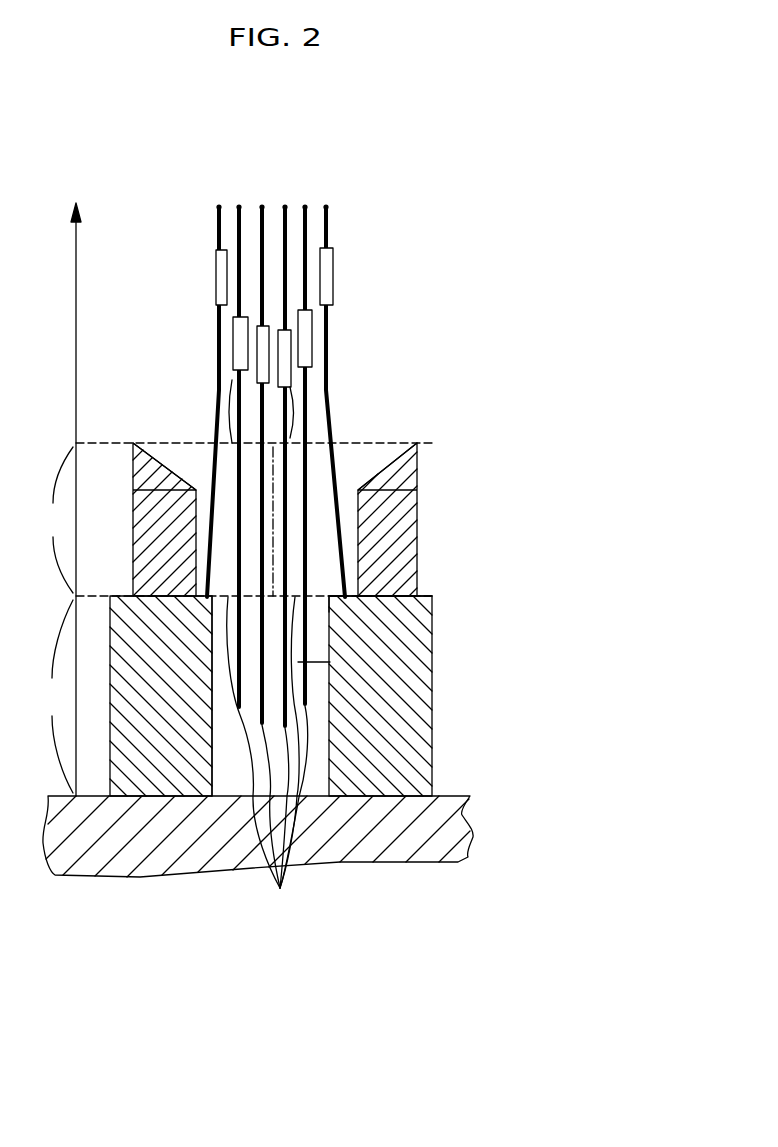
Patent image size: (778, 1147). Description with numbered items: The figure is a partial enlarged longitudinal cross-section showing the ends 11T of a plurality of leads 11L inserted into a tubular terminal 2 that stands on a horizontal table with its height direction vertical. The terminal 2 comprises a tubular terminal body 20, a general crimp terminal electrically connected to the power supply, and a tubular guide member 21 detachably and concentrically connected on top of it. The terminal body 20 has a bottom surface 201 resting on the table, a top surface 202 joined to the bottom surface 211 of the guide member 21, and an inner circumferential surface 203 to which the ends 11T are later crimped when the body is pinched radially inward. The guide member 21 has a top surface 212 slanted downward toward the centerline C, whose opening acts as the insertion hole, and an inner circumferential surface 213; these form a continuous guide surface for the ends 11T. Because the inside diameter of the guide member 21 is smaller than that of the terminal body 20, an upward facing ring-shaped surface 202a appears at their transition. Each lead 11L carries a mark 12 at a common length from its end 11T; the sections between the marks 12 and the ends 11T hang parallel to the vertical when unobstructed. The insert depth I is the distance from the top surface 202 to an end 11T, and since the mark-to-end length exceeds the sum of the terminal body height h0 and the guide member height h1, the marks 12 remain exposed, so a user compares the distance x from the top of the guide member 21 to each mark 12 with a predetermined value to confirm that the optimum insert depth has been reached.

The tubular terminal 2 is at (512, 592).
The lead 11L is at (261, 233).
The end of lead 11T is at (211, 615).
The mark 12 is at (265, 362).
The terminal body 20 is at (415, 765).
The guide member 21 is at (398, 512).
The bottom surface of terminal body 201 is at (390, 797).
The top surface of terminal body 202 is at (404, 597).
The ring-shaped surface 202a is at (360, 592).
The inner circumferential surface of terminal body 203 is at (212, 725).
The bottom surface of guide member 211 is at (370, 600).
The top surface of guide member 212 is at (390, 467).
The inner circumferential surface of guide member 213 is at (196, 530).
The distance from top end of guide member to mark x is at (230, 395).
The centerline C is at (273, 487).
The insert depth I is at (228, 658).
The height of terminal body h0 is at (56, 696).
The height of guide member h1 is at (60, 499).